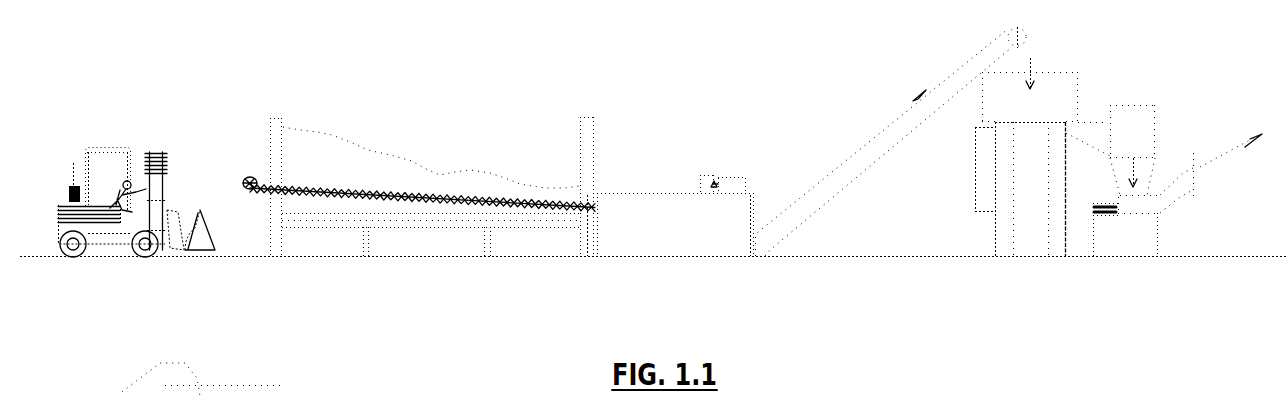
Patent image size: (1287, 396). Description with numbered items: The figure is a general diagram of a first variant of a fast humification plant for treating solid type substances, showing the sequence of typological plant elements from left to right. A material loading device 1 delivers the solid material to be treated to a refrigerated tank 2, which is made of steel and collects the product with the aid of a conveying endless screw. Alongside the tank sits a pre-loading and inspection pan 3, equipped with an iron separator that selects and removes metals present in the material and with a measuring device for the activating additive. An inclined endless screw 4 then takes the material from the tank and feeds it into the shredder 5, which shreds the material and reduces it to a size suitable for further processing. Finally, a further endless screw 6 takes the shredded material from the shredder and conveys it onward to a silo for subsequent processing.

The material loading device 1 is at (136, 225).
The refrigerated tank 2 is at (419, 210).
The pre-loading and inspection pan 3 is at (675, 239).
The endless screw for feeding material into shredder 4 is at (891, 165).
The shredder 5 is at (1043, 180).
The endless screw for feeding material into silo 6 is at (1177, 204).